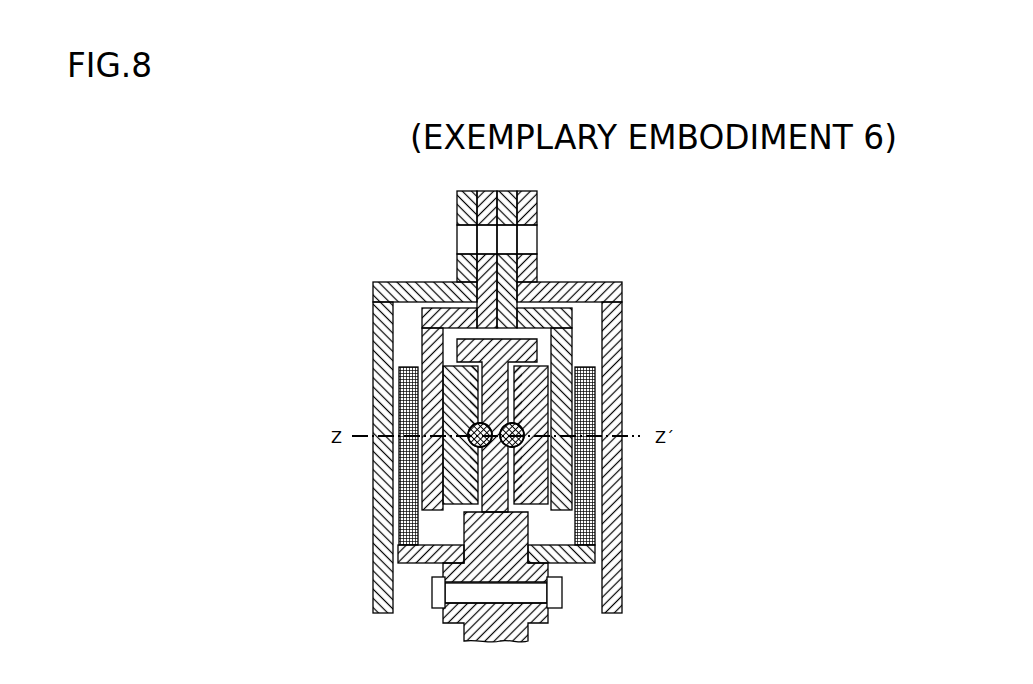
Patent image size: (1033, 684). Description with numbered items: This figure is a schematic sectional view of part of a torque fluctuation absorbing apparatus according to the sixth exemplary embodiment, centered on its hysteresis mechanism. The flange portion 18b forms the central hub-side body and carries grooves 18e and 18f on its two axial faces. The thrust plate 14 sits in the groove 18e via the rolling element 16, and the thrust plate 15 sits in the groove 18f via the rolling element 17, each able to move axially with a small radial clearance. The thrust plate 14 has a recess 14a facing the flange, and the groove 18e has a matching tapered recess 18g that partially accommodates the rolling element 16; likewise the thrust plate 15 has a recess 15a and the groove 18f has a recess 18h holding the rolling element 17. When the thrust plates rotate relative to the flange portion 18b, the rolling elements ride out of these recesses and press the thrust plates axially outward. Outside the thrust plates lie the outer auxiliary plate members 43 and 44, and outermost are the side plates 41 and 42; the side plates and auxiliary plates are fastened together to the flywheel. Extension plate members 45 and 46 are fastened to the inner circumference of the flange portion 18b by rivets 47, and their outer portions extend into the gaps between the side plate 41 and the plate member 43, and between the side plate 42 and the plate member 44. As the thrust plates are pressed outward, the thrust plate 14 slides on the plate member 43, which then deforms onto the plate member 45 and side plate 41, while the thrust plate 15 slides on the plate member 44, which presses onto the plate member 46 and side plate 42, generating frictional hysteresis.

The thrust plate 14 is at (530, 388).
The recess 14a is at (522, 424).
The thrust plate 15 is at (462, 388).
The recess 15a is at (470, 424).
The rolling element 16 is at (520, 447).
The rolling element 17 is at (472, 447).
The flange portion 18b is at (519, 632).
The groove 18e is at (552, 366).
The groove 18f is at (445, 366).
The recess 18g is at (550, 470).
The recess 18h is at (445, 470).
The side plate 41 is at (612, 555).
The side plate 42 is at (383, 555).
The outer auxiliary plate member 43 is at (572, 320).
The outer auxiliary plate member 44 is at (422, 320).
The extension plate member 45 is at (588, 528).
The extension plate member 46 is at (407, 528).
The rivet 47 is at (437, 594).